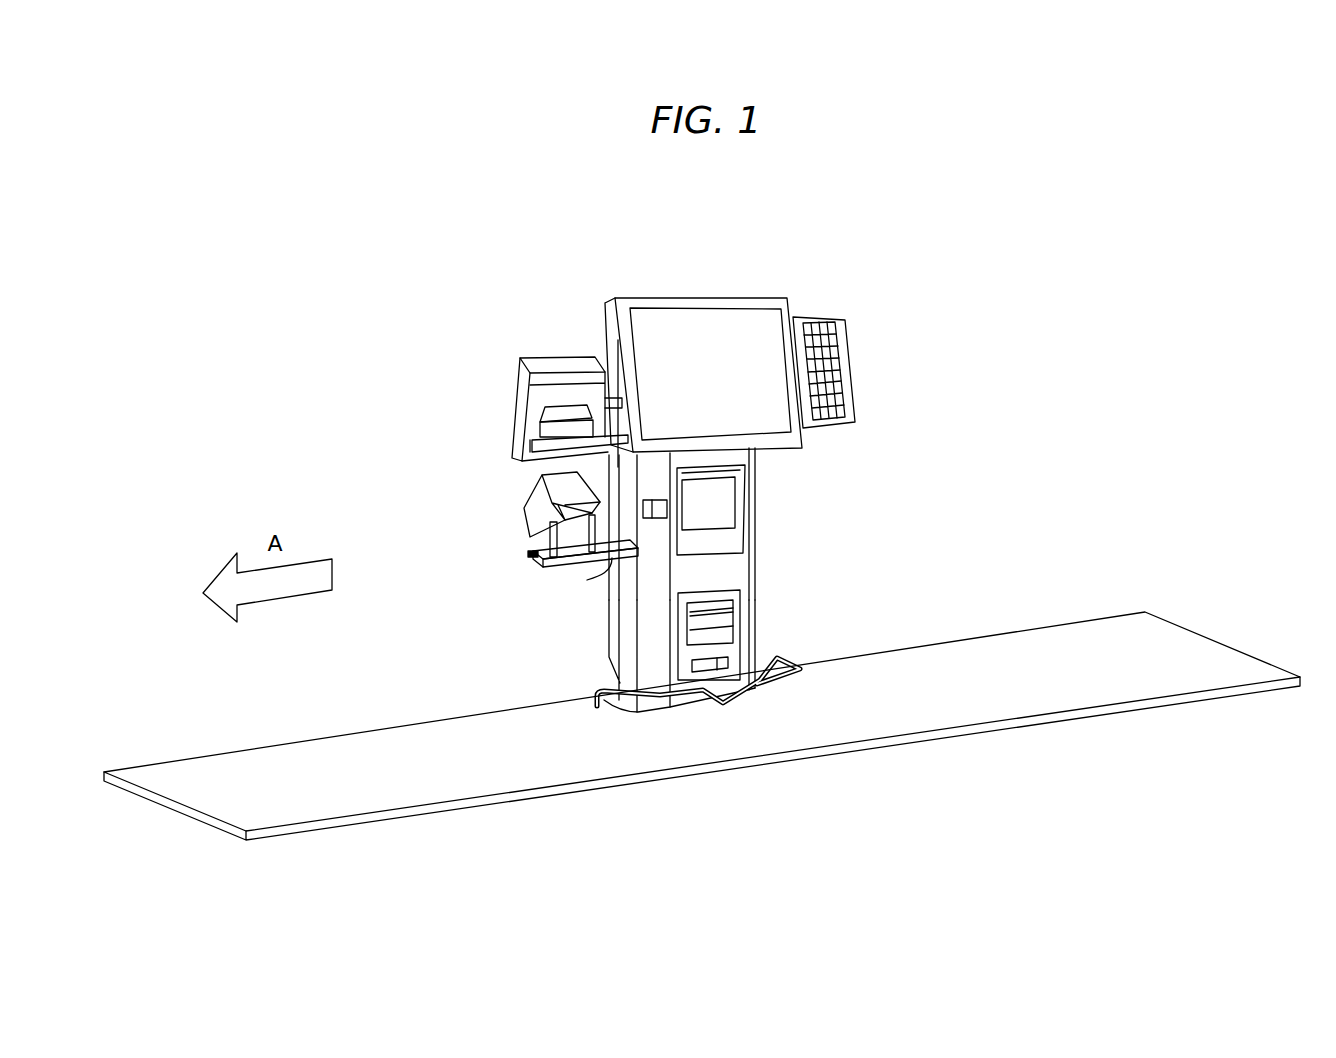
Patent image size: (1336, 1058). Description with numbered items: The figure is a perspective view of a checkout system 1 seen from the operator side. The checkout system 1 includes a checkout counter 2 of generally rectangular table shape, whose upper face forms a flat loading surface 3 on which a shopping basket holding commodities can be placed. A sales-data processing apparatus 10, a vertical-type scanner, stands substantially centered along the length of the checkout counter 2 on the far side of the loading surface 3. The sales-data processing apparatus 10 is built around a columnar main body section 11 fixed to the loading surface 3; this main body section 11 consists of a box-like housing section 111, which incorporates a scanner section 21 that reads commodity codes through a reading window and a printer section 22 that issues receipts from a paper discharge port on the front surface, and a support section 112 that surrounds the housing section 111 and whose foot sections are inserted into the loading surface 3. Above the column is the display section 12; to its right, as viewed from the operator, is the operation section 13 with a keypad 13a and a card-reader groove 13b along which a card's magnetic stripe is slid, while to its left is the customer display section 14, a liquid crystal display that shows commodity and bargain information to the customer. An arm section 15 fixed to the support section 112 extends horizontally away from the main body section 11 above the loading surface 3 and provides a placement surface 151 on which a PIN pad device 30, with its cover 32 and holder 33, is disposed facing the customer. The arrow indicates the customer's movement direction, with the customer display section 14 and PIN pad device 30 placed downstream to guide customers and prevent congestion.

The checkout system 1 is at (952, 298).
The checkout counter 2 is at (1212, 638).
The loading surface 3 is at (1086, 645).
The sales-data processing apparatus 10 is at (694, 260).
The main body section 11 is at (757, 472).
The display section 12 is at (658, 297).
The operation section 13 is at (815, 317).
The keypad 13a is at (828, 347).
The groove 13b is at (855, 395).
The customer display section 14 is at (547, 356).
The arm section 15 is at (533, 553).
The scanner section 21 is at (722, 505).
The printer section 22 is at (722, 620).
The PIN pad device 30 is at (518, 498).
The cover 32 is at (544, 489).
The holder 33 is at (540, 543).
The housing section 111 is at (648, 651).
The support section 112 is at (625, 603).
The placement surface 151 is at (612, 566).